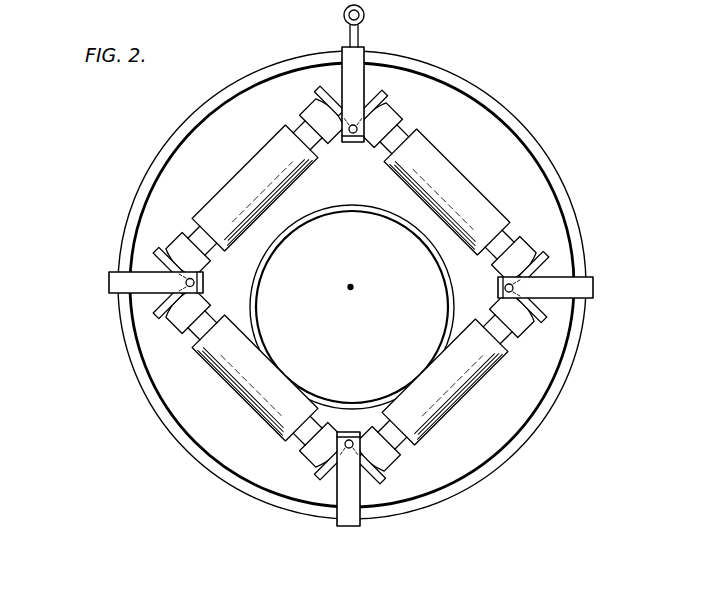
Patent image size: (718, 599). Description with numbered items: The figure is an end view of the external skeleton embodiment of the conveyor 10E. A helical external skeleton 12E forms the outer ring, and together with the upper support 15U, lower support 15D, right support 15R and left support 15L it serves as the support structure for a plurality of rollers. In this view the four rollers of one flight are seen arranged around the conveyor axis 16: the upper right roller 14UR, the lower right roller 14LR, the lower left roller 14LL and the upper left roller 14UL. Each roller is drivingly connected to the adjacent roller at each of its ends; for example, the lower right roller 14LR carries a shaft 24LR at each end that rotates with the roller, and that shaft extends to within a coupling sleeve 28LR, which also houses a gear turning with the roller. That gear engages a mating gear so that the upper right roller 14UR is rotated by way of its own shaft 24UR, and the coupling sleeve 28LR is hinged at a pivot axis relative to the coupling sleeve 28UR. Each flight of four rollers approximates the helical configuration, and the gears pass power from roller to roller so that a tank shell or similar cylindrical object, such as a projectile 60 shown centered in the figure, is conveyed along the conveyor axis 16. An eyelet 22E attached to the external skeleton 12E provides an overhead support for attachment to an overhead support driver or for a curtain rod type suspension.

The external skeleton conveyor 10E is at (359, 274).
The helical external skeleton 12E is at (478, 92).
The upper left roller 14UL is at (258, 162).
The upper right roller 14UR is at (492, 187).
The lower left roller 14LL is at (250, 397).
The lower right roller 14LR is at (487, 387).
The upper support 15U is at (319, 87).
The lower support 15D is at (352, 523).
The left support 15L is at (108, 282).
The right support 15R is at (550, 294).
The conveyor axis 16 is at (350, 287).
The eyelet 22E is at (362, 31).
The shaft 24UR is at (522, 236).
The shaft 24LR is at (513, 338).
The coupling sleeve 28UR is at (549, 255).
The coupling sleeve 28LR is at (548, 330).
The projectile 60 is at (355, 207).